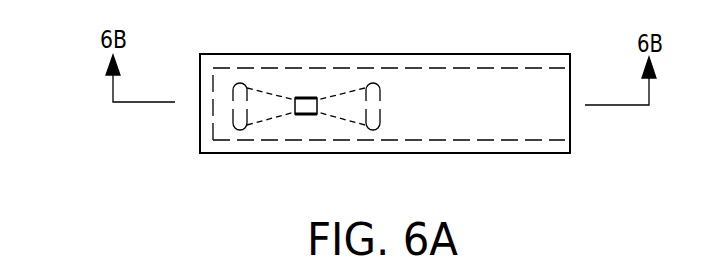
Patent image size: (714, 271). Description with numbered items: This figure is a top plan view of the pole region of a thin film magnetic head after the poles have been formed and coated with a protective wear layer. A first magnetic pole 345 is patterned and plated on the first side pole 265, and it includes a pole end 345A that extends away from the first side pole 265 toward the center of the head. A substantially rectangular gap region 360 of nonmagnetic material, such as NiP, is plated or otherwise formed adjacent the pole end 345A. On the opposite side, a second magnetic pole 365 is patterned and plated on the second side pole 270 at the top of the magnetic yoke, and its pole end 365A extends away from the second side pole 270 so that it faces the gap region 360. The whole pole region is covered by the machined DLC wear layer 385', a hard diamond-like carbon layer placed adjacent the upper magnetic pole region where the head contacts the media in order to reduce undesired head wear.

The machined DLC wear layer 385' is at (387, 90).
The gap region 360 is at (304, 98).
The pole end 345A is at (294, 98).
The pole end 365A is at (317, 98).
The first magnetic pole 345 is at (264, 113).
The second magnetic pole 365 is at (349, 113).
The first side pole 265 is at (242, 131).
The second side pole 270 is at (372, 131).